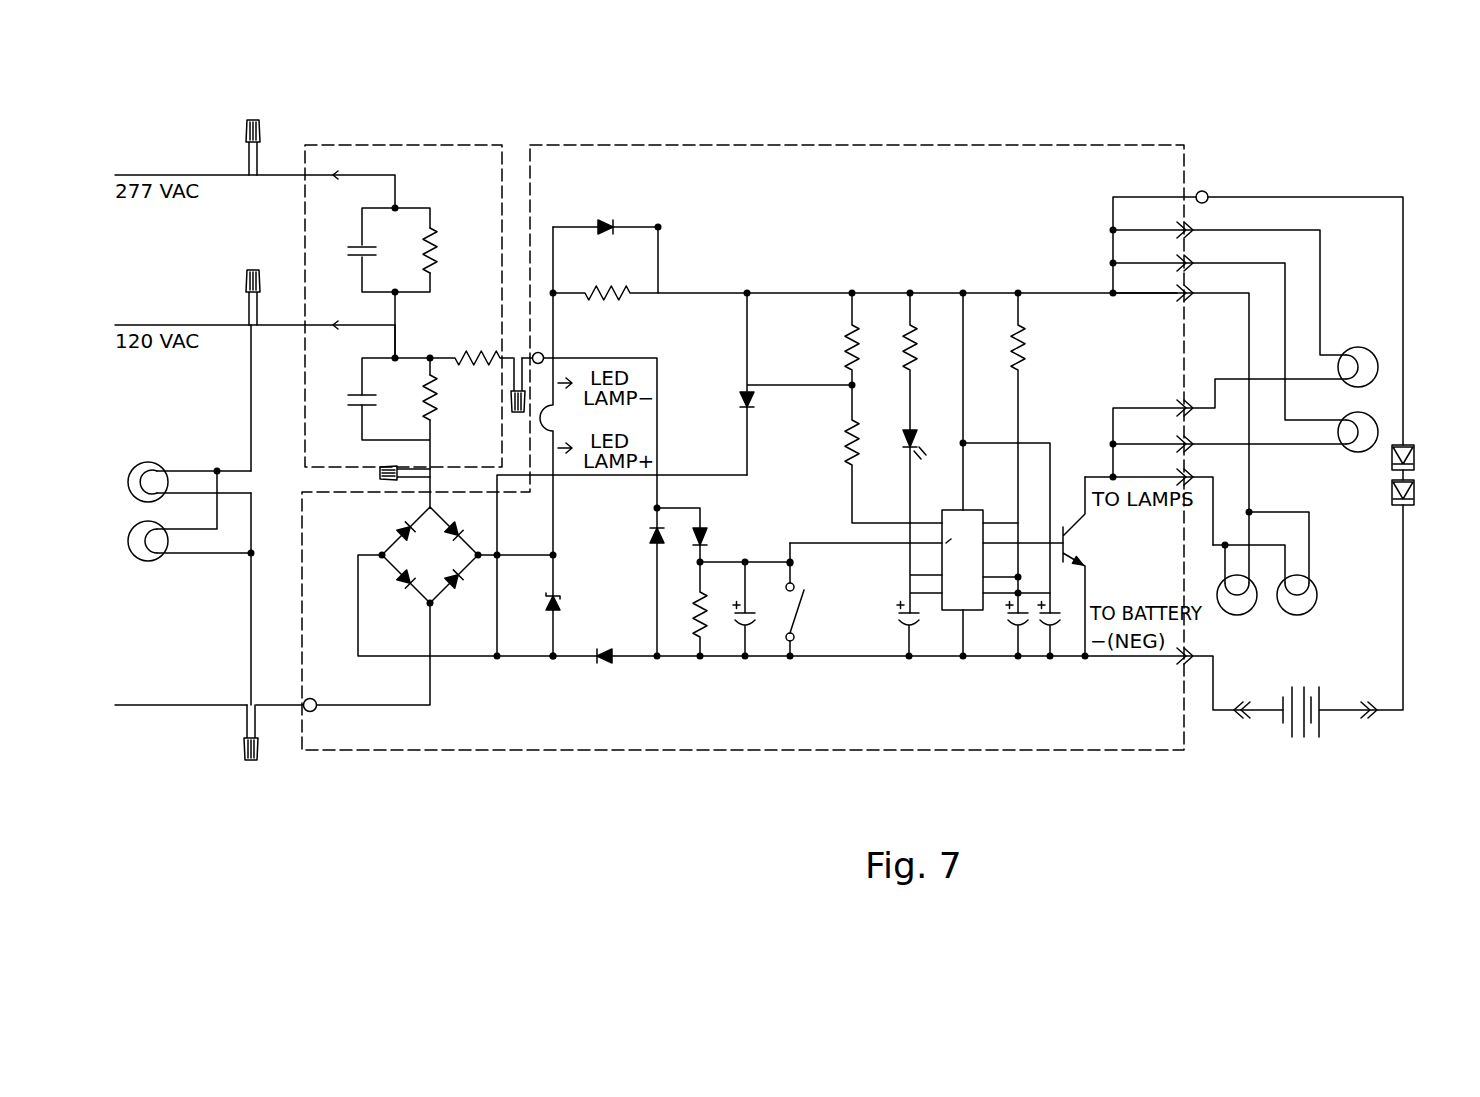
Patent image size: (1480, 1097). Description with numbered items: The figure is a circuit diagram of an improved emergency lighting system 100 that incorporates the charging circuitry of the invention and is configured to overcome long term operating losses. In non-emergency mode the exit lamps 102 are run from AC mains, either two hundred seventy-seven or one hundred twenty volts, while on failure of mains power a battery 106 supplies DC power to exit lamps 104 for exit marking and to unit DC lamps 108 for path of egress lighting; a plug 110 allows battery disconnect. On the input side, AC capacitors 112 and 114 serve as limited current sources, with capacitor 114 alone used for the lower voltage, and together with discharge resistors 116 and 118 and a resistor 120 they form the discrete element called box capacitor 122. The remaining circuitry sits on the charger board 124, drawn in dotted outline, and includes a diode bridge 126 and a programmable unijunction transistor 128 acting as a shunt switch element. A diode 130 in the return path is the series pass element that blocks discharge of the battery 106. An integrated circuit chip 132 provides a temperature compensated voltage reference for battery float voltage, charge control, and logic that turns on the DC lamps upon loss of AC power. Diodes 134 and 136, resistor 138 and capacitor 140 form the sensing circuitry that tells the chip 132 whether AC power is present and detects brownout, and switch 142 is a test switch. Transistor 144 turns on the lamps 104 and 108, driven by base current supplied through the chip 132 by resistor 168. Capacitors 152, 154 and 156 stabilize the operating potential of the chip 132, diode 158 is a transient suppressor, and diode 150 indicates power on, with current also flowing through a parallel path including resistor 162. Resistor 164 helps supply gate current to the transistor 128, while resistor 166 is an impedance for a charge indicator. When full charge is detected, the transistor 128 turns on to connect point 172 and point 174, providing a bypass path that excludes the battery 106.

The emergency lighting system 100 is at (873, 58).
The exit lamps 102 is at (133, 450).
The exit lamps 104 is at (1266, 625).
The battery 106 is at (1307, 745).
The unit DC lamps 108 is at (1378, 404).
The plug 110 is at (1414, 455).
The AC capacitor 112 is at (347, 237).
The AC capacitor 114 is at (345, 412).
The discharge resistor 116 is at (445, 294).
The discharge resistor 118 is at (445, 442).
The resistor 120 is at (462, 350).
The box capacitor 122 is at (342, 146).
The charger board 124 is at (785, 147).
The diode bridge 126 is at (390, 523).
The programmable unijunction transistor 128 is at (730, 393).
The diode 130 is at (599, 670).
The integrated circuit chip 132 is at (936, 568).
The diode 134 is at (645, 537).
The diode 136 is at (717, 530).
The resistor 138 is at (692, 628).
The capacitor 140 is at (738, 628).
The switch 142 is at (803, 613).
The transistor 144 is at (1082, 550).
The diode 150 is at (617, 208).
The capacitor 152 is at (900, 632).
The capacitor 154 is at (1009, 632).
The capacitor 156 is at (1057, 632).
The diode 158 is at (561, 591).
The resistor 162 is at (630, 280).
The resistor 164 is at (835, 347).
The resistor 166 is at (885, 347).
The resistor 168 is at (1036, 342).
The point 172 is at (752, 283).
The point 174 is at (547, 662).